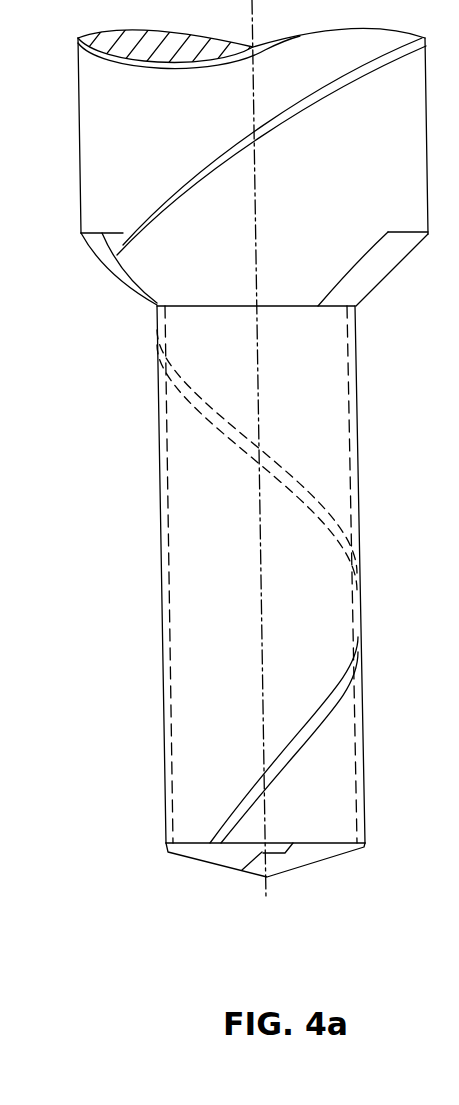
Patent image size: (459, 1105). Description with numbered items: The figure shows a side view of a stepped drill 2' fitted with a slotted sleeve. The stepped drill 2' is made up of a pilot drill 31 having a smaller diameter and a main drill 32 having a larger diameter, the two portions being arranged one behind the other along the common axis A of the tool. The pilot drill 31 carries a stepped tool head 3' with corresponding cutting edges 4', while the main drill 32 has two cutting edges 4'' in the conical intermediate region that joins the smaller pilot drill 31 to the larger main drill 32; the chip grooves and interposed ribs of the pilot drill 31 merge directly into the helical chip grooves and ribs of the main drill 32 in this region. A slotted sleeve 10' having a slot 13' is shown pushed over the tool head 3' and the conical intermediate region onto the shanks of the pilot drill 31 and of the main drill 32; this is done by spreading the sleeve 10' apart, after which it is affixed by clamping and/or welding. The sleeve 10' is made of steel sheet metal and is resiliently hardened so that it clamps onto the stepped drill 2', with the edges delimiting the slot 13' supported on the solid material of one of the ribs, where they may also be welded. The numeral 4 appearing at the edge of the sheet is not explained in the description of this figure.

The axis of rotation A is at (256, 213).
The main drill 32 is at (78, 152).
The slot 13' is at (287, 440).
The cutting edges 4'' is at (257, 297).
The cutting edge 4 is at (453, 364).
The slotted sleeve 10' is at (292, 574).
The stepped drill 2' is at (114, 574).
The pilot drill 31 is at (137, 564).
The stepped tool head 3' is at (279, 868).
The cutting edges 4' is at (266, 886).